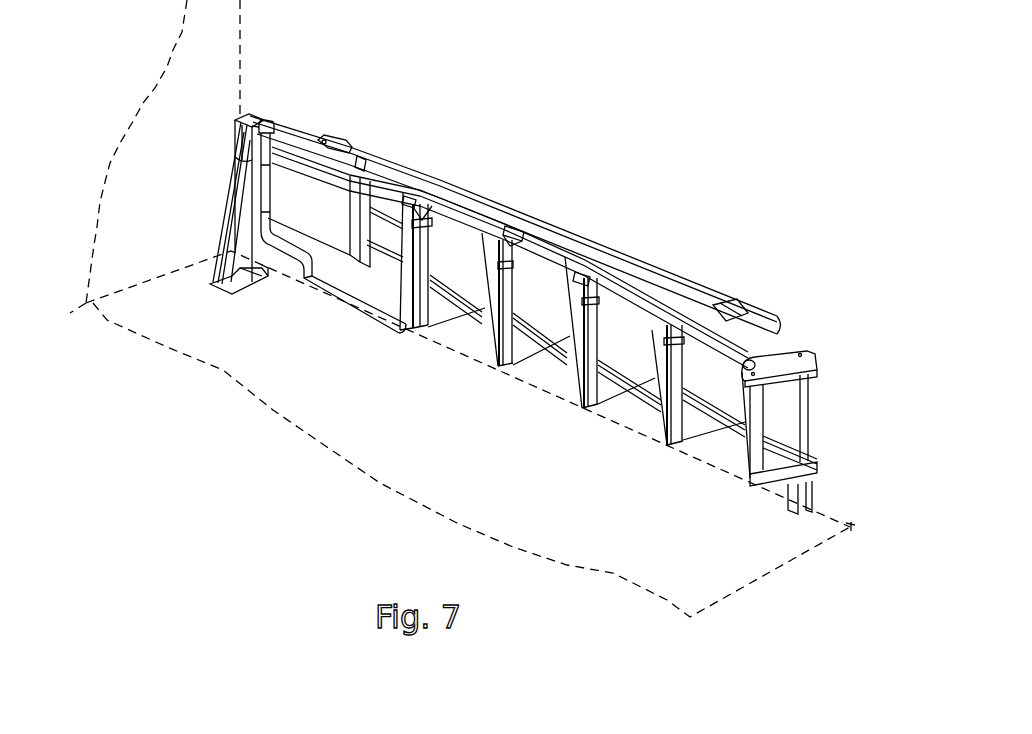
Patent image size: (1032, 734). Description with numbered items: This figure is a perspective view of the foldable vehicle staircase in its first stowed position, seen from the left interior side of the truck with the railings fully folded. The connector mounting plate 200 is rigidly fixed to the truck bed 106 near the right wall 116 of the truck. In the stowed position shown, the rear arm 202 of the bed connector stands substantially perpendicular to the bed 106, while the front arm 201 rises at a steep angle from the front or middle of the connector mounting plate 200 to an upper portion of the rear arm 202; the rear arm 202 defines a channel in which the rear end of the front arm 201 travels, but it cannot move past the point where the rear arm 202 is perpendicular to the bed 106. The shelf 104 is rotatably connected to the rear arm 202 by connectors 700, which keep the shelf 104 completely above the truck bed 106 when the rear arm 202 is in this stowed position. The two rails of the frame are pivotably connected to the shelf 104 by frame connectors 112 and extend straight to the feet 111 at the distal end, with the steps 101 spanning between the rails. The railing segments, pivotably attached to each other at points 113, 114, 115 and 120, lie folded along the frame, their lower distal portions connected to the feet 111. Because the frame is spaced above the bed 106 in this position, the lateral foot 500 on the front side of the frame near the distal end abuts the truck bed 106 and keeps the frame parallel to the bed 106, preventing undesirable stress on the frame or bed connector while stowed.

The steps 101 is at (572, 328).
The shelf 104 is at (326, 210).
The truck bed 106 is at (541, 498).
The feet 111 is at (780, 360).
The frame connectors 112 is at (332, 140).
The railing pivot point 113 is at (590, 277).
The railing joint 114 is at (730, 307).
The railing pivot point 115 is at (513, 230).
The right wall 116 is at (186, 173).
The railing pivot point 120 is at (407, 200).
The connector mounting plate 200 is at (253, 281).
The front arm 201 is at (233, 207).
The rear arm 202 is at (251, 115).
The lateral foot 500 is at (800, 500).
The connectors 700 is at (270, 143).